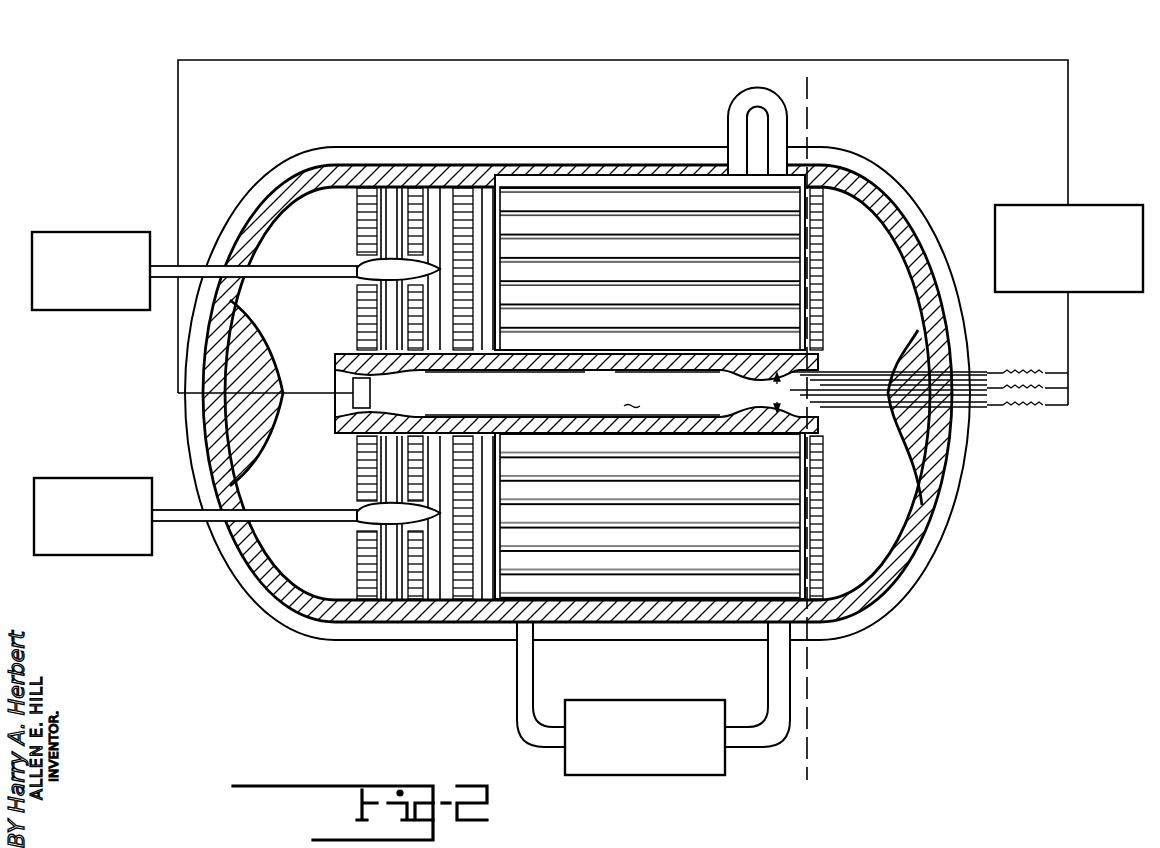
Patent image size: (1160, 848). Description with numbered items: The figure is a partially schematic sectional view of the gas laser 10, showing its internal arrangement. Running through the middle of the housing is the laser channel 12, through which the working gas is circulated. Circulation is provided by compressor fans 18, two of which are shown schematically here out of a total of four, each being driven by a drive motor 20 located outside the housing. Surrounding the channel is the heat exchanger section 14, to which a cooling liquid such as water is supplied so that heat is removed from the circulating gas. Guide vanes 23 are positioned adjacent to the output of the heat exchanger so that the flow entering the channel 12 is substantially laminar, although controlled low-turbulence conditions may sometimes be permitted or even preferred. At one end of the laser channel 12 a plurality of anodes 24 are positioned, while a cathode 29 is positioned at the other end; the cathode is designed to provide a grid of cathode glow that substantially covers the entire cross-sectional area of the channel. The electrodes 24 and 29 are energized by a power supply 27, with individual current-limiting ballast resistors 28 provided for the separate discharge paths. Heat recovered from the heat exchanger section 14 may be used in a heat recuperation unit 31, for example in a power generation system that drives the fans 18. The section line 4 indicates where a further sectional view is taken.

The section line 4- 4 is at (777, 780).
The gas laser 10 is at (637, 137).
The laser channel 12 is at (576, 393).
The heat exchanger section 14 is at (557, 200).
The compressor fans 18 is at (392, 216).
The motors 20 is at (85, 312).
The guide vanes 23 is at (826, 250).
The anodes 24 is at (944, 368).
The power supply 27 is at (1086, 292).
The ballast resistors 28 is at (1045, 405).
The cathode 29 is at (372, 393).
The heat recuperation unit 31 is at (678, 700).